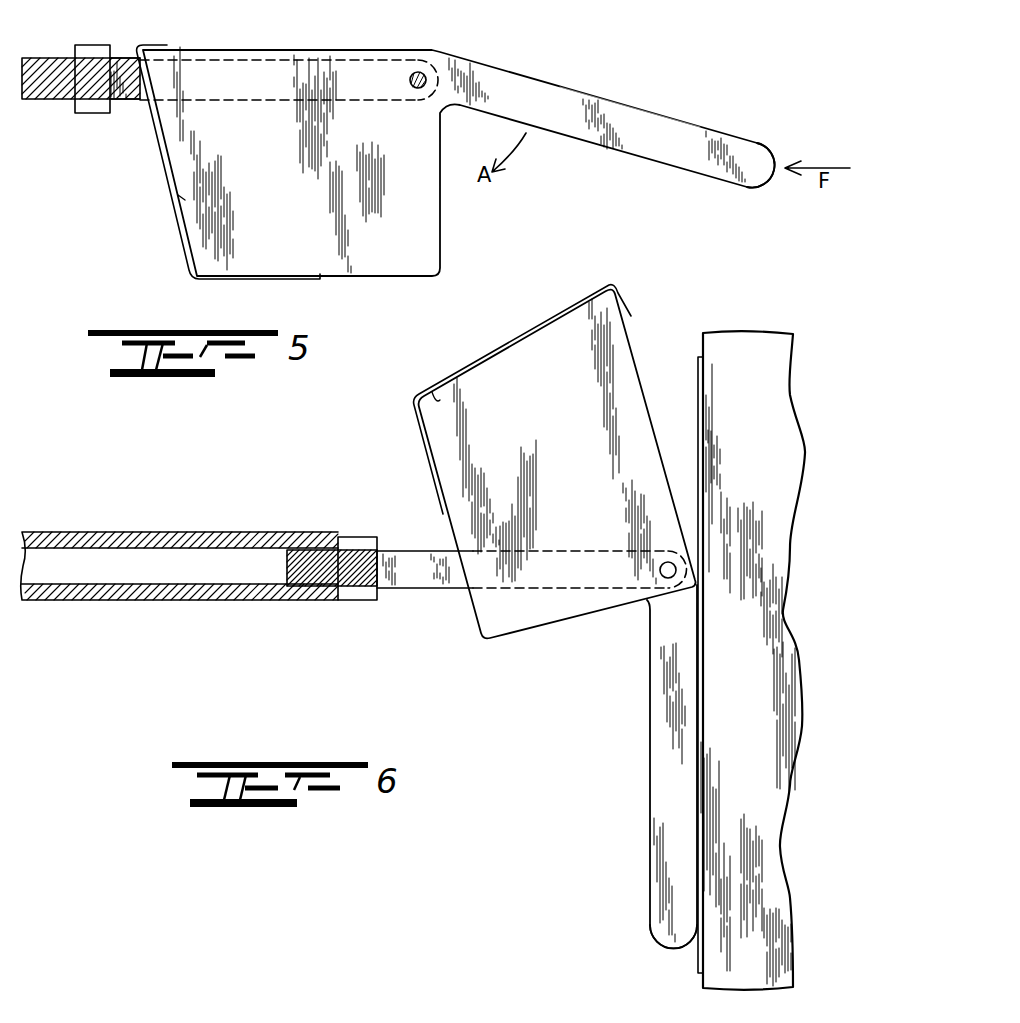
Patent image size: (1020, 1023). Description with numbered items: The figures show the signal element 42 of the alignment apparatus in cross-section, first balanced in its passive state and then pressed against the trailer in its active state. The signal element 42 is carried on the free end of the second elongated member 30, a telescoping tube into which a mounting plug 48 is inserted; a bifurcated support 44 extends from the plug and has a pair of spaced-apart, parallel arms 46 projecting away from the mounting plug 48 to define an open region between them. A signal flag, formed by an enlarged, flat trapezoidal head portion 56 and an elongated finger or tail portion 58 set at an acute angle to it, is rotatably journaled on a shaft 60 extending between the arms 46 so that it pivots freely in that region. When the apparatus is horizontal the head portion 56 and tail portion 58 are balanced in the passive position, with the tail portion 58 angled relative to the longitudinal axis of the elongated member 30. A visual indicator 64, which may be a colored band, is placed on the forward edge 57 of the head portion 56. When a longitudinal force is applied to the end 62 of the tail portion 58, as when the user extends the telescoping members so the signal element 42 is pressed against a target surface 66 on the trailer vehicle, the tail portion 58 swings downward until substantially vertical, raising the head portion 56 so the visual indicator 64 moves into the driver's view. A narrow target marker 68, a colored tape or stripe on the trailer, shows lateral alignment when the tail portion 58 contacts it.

In FIG. 6, the second elongated member 30 is at (191, 600).
In FIG. 5, the signal element 42 is at (536, 50).
In FIG. 6, the signal element 42 is at (571, 662).
In FIG. 5, the bifurcated support 44 is at (88, 45).
In FIG. 6, the bifurcated support 44 is at (355, 601).
In FIG. 5, the arms 46 is at (139, 100).
In FIG. 6, the arms 46 is at (430, 553).
In FIG. 5, the mounting plug 48 is at (47, 57).
In FIG. 6, the mounting plug 48 is at (318, 601).
In FIG. 5, the head portion 56 is at (315, 260).
In FIG. 6, the head portion 56 is at (613, 350).
In FIG. 5, the edge 57 is at (180, 195).
In FIG. 6, the edge 57 is at (440, 394).
In FIG. 5, the tail portion 58 is at (605, 102).
In FIG. 6, the tail portion 58 is at (662, 727).
In FIG. 5, the shaft 60 is at (417, 71).
In FIG. 6, the shaft 60 is at (660, 578).
In FIG. 5, the end 62 is at (766, 156).
In FIG. 6, the end 62 is at (663, 937).
In FIG. 5, the visual indicator 64 is at (158, 159).
In FIG. 6, the visual indicator 64 is at (521, 338).
In FIG. 6, the target surface 66 is at (700, 394).
In FIG. 6, the target marker 68 is at (700, 370).